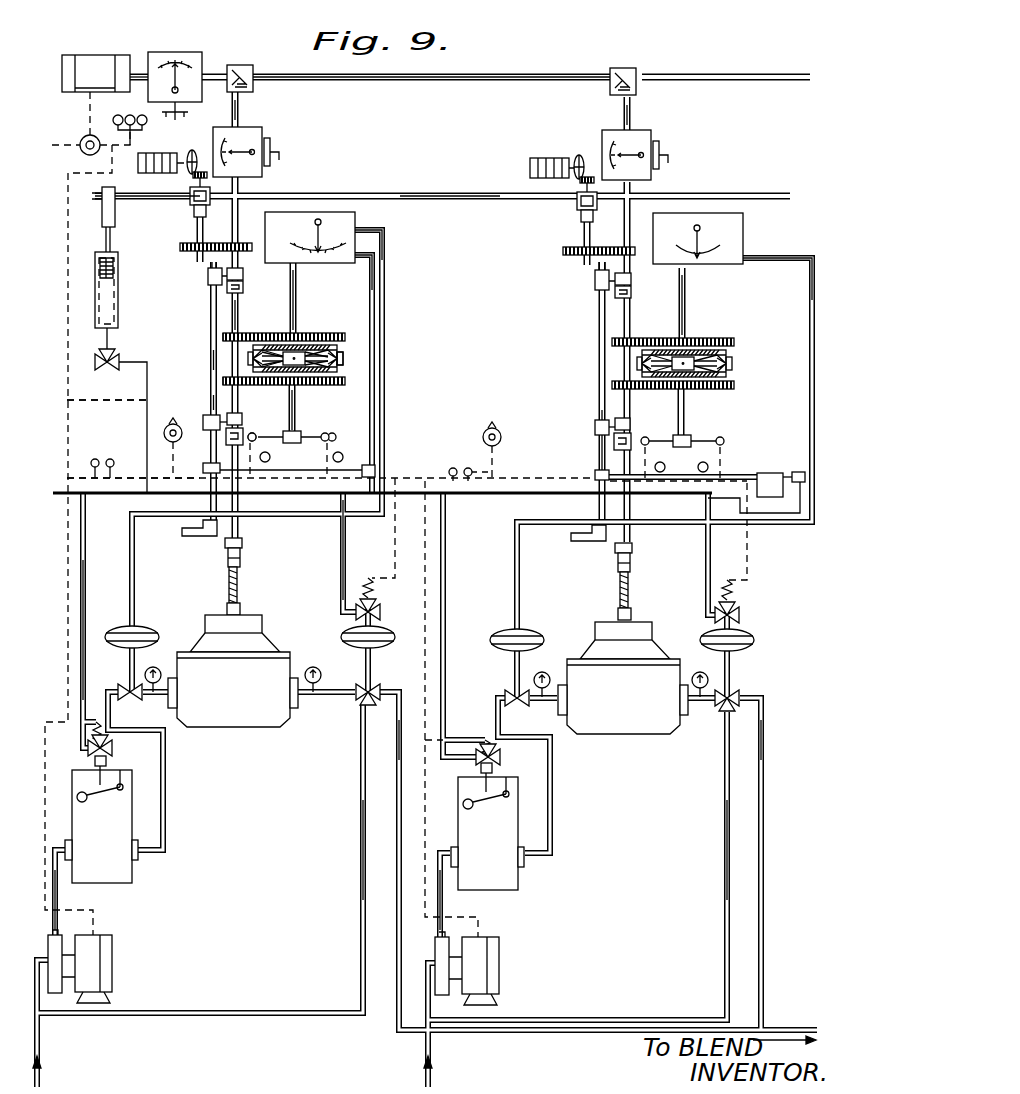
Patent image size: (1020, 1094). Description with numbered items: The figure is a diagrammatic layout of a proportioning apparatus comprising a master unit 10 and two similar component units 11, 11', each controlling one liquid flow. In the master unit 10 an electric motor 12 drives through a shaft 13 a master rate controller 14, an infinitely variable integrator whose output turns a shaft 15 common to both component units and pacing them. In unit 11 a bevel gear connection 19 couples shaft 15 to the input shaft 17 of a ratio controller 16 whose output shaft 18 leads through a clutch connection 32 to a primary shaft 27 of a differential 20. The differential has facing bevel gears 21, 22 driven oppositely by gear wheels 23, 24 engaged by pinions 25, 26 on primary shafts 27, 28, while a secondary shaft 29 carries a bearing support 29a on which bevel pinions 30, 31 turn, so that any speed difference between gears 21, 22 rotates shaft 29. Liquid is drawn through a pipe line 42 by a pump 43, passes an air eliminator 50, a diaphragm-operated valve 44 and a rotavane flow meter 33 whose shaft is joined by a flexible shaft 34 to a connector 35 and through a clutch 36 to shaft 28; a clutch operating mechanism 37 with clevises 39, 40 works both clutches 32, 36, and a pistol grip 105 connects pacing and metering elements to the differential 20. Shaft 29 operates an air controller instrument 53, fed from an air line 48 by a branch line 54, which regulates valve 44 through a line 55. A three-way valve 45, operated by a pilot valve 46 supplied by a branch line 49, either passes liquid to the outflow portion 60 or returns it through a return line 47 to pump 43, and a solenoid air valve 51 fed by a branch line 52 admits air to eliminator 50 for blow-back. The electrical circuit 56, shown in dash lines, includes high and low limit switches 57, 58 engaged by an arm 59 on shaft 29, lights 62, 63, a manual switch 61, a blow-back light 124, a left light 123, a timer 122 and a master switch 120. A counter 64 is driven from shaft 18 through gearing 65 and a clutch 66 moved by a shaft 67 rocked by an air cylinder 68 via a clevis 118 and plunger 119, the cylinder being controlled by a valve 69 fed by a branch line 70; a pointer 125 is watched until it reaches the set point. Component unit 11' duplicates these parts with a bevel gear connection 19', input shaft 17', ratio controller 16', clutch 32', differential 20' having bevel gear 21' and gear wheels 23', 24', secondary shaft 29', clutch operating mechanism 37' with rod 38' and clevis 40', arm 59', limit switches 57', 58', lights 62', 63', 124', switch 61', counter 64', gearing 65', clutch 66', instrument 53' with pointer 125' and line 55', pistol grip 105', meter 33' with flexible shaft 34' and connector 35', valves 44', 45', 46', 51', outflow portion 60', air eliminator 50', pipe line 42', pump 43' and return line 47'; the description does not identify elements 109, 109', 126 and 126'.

The master unit 10 is at (156, 44).
The component unit 11 is at (424, 303).
The electric motor 12 is at (88, 48).
The shaft 13 is at (138, 72).
The master rate controller 14 is at (220, 44).
The shaft 15 is at (392, 76).
The ratio controller 16 is at (265, 137).
The input shaft 17 is at (259, 104).
The output shaft 18 is at (245, 187).
The bevel gear connection 19 is at (256, 55).
The differential 20 is at (340, 297).
The bevel gear 21 is at (299, 339).
The bevel gear 22 is at (330, 385).
The gear wheel 23 is at (284, 324).
The gear wheel 24 is at (326, 391).
The pinion 25 is at (223, 338).
The pinion 26 is at (223, 381).
The differential primary shaft 27 is at (232, 318).
The differential primary shaft 28 is at (211, 398).
The secondary shaft 29 is at (315, 300).
The bearing support 29a is at (345, 353).
The bevel gear pinion 30 is at (262, 359).
The bevel gear pinion 31 is at (345, 366).
The clutch connection 32 is at (244, 281).
The flow meter 33 is at (233, 664).
The flexible shaft 34 is at (254, 587).
The connector 35 is at (256, 550).
The clutch connection 36 is at (212, 435).
The clutch operating mechanism 37 is at (196, 356).
The rod 38' is at (586, 450).
The clevis 39 is at (296, 258).
The clevis 40 is at (249, 418).
The pipe line 42 is at (83, 900).
The pump 43 is at (110, 958).
The valve 44 is at (123, 663).
The three-way valve 45 is at (386, 677).
The pilot valve 46 is at (379, 617).
The return pipe line 47 is at (340, 850).
The air line 48 is at (486, 497).
The branch line 49 is at (342, 562).
The air eliminator 50 is at (101, 819).
The air valve 51 is at (120, 750).
The branch line 52 is at (85, 595).
The air controller instrument 53 is at (337, 227).
The branch line 54 is at (373, 270).
The line 55 is at (387, 242).
The electrical circuit 56 is at (78, 432).
The high limit switch 57 is at (262, 423).
The low limit switch 58 is at (334, 421).
The arm 59 is at (292, 451).
The pipe line portion 60 is at (386, 739).
The manually operable switch 61 is at (145, 435).
The light 62 is at (284, 459).
The light 63 is at (376, 429).
The counter 64 is at (161, 146).
The shaft and gearing 65 is at (209, 159).
The clutch connection 66 is at (204, 236).
The shaft 67 is at (383, 196).
The air cylinder 68 is at (118, 278).
The solenoid-operated valve 69 is at (119, 357).
The branch line 70 is at (107, 403).
The pistol grip 105 is at (187, 540).
The valve 109 is at (326, 459).
The clevis 118 is at (115, 205).
The plunger 119 is at (111, 235).
The main master switch 120 is at (85, 152).
The timer 122 is at (770, 472).
The left light 123 is at (136, 107).
The light 124 is at (134, 463).
The pointer 125 is at (342, 232).
The contact 126 is at (87, 458).
The bevel gear connection 19' is at (644, 64).
The input shaft 17' is at (657, 107).
The ratio controller 16' is at (660, 138).
The counter 64' is at (544, 153).
The shaft and gearing 65' is at (579, 168).
The clutch connection 66' is at (589, 227).
The air controller instrument 53' is at (726, 231).
The pointer 125' is at (717, 238).
The clutch connection 32' is at (637, 286).
The secondary shaft 29' is at (710, 305).
The differential 20' is at (733, 308).
The component unit 11' is at (563, 354).
The gear wheel 23' is at (673, 342).
The bevel gear 21' is at (684, 363).
The gear wheel 24' is at (673, 385).
The clutch operating mechanism 37' is at (577, 421).
The clevis 40' is at (620, 434).
The arm 59' is at (692, 419).
The high limit switch 57' is at (657, 426).
The low limit switch 58' is at (741, 423).
The light 62' is at (683, 465).
The light 63' is at (727, 471).
The valve 109' is at (797, 512).
The manually operable switch 61' is at (511, 441).
The contact 126' is at (443, 464).
The light 124' is at (505, 470).
The line 55' is at (777, 279).
The pistol grip 105' is at (574, 545).
The connector 35' is at (651, 553).
The flexible shaft 34' is at (650, 592).
The flow meter 33' is at (621, 668).
The pilot valve 46' is at (745, 620).
The valve 44' is at (508, 667).
The three-way valve 45' is at (754, 685).
The pipe line portion 60' is at (787, 744).
The air valve 51' is at (510, 757).
The air eliminator 50' is at (487, 826).
The pipe line 42' is at (470, 900).
The pump 43' is at (492, 957).
The return pipe line 47' is at (699, 850).